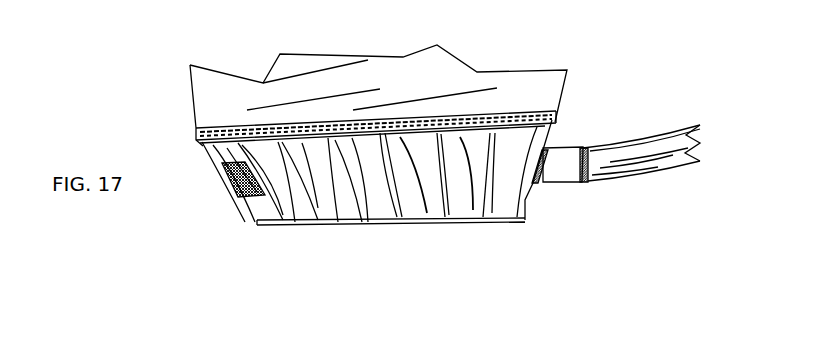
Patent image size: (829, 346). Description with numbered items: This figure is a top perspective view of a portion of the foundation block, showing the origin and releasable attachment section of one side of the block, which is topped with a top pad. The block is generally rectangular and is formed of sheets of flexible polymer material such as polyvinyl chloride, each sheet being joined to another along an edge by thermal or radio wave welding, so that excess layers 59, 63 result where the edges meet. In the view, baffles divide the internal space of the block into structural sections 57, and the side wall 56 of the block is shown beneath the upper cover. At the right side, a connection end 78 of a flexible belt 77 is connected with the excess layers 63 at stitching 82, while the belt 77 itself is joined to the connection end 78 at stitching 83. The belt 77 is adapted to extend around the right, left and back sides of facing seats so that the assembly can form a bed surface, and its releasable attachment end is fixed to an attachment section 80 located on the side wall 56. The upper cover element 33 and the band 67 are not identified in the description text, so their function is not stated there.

The housing cover 33 is at (298, 102).
The upper rail 67 is at (247, 128).
The excess layer 59 is at (193, 133).
The attachment section 80 is at (234, 196).
The side wall 56 is at (259, 216).
The structural section 57 is at (408, 205).
The excess layer 63 is at (527, 208).
The stitching 82 is at (537, 177).
The connection end 78 is at (558, 168).
The stitching 83 is at (587, 151).
The flexible belt 77 is at (612, 157).